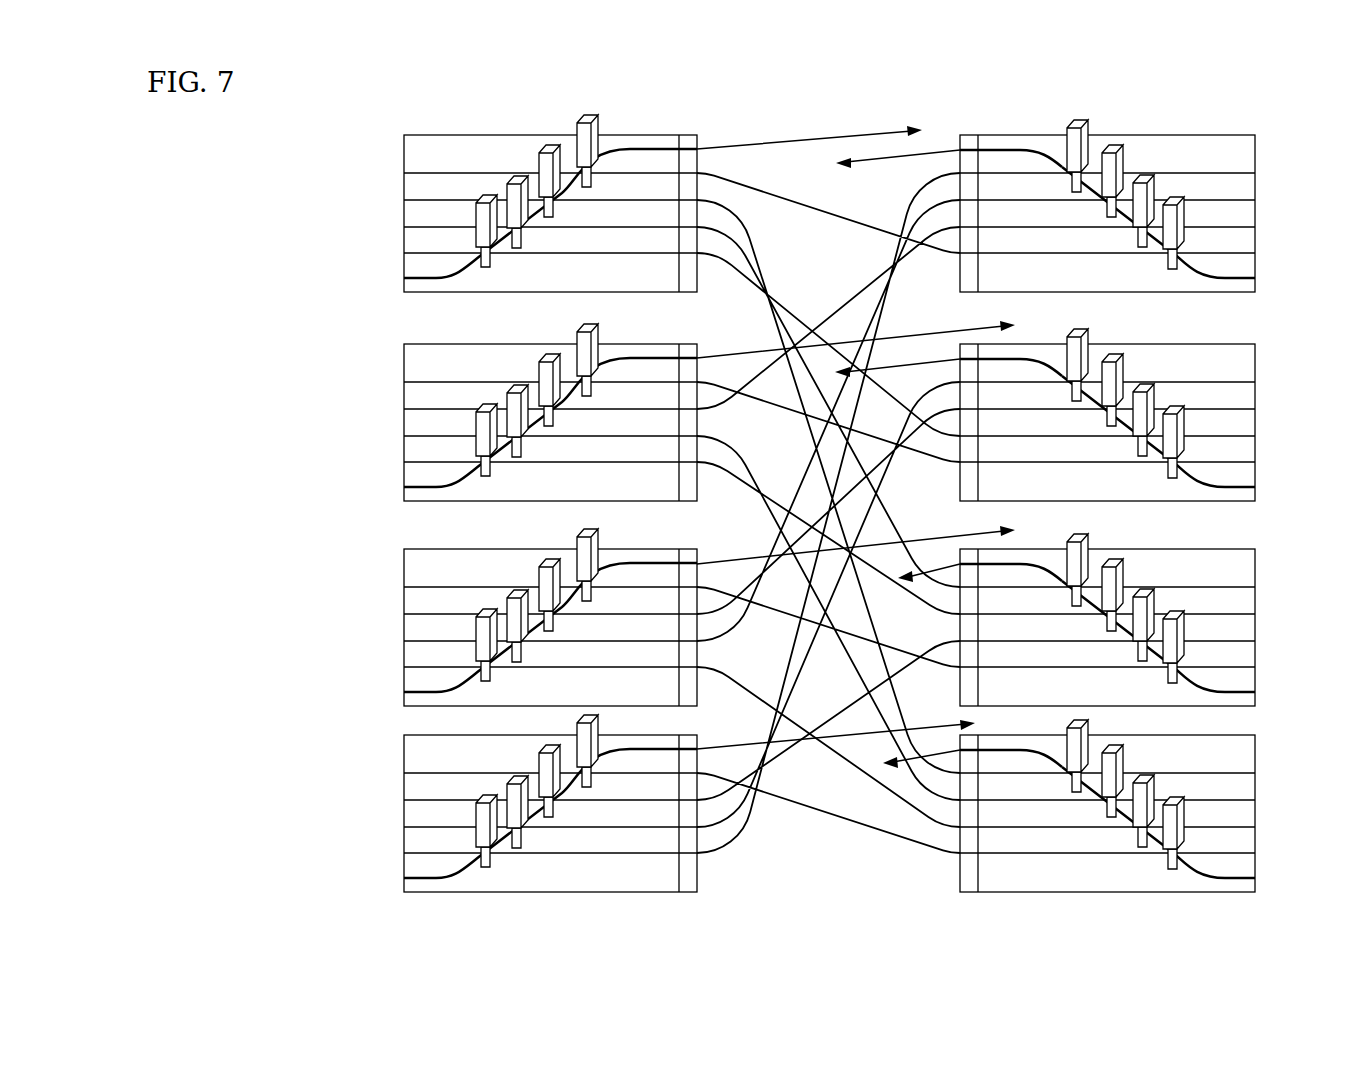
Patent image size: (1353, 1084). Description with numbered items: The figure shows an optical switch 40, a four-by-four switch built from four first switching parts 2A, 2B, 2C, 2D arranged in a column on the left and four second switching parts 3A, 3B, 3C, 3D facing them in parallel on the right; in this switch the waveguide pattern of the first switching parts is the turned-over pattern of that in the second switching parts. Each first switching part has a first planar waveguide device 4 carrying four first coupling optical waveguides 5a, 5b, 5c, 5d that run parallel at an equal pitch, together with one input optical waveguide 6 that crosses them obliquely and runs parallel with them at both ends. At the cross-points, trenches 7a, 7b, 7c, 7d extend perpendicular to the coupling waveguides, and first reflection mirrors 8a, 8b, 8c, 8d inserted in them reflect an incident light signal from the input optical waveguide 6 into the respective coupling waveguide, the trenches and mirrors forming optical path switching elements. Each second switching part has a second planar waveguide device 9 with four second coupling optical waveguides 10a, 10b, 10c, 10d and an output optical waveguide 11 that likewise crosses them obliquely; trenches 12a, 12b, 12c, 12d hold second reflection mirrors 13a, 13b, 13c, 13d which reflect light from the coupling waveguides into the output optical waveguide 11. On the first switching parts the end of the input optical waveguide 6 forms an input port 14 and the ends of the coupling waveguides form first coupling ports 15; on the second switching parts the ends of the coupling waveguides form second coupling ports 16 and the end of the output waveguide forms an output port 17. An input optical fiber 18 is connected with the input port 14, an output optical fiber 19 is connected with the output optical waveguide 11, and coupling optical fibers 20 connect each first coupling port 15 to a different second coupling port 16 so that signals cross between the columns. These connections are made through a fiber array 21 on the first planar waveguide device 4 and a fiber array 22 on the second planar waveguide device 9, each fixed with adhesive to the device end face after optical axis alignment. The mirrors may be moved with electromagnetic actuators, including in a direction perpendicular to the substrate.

The first switching part 2A is at (398, 150).
The first switching part 2B is at (398, 358).
The first switching part 2C is at (398, 564).
The first switching part 2D is at (398, 751).
The second switching part 3A is at (1246, 126).
The second switching part 3B is at (1240, 338).
The second switching part 3C is at (1241, 543).
The second switching part 3D is at (1241, 728).
The first planar waveguide device 4 is at (462, 140).
The first coupling optical waveguide 5a is at (420, 173).
The first coupling optical waveguide 5b is at (420, 200).
The first coupling optical waveguide 5c is at (420, 227).
The first coupling optical waveguide 5d is at (420, 253).
The input optical waveguide 6 is at (440, 288).
The trench 7a is at (590, 390).
The trench 7b is at (552, 420).
The trench 7c is at (520, 447).
The trench 7d is at (490, 472).
The first reflection mirror 8a is at (578, 338).
The first reflection mirror 8b is at (540, 369).
The first reflection mirror 8c is at (508, 401).
The first reflection mirror 8d is at (477, 426).
The second planar waveguide device 9 is at (1208, 148).
The second coupling optical waveguide 10a is at (1255, 253).
The second coupling optical waveguide 10b is at (1255, 227).
The second coupling optical waveguide 10c is at (1255, 200).
The second coupling optical waveguide 10d is at (1255, 173).
The output optical waveguide 11 is at (1255, 278).
The trench 12a is at (1168, 474).
The trench 12b is at (1138, 450).
The trench 12c is at (1107, 420).
The trench 12d is at (1072, 390).
The second reflection mirror 13a is at (1182, 421).
The second reflection mirror 13b is at (1152, 395).
The second reflection mirror 13c is at (1118, 362).
The second reflection mirror 13d is at (1080, 330).
The input port 14 is at (676, 135).
The first coupling port 15 is at (676, 175).
The second coupling port 16 is at (983, 173).
The output port 17 is at (985, 135).
The input optical fiber 18 is at (856, 130).
The output optical fiber 19 is at (905, 160).
The coupling optical fiber 20 is at (812, 216).
The fiber array 21 is at (677, 134).
The fiber array 22 is at (972, 133).
The optical switch 40 is at (745, 102).